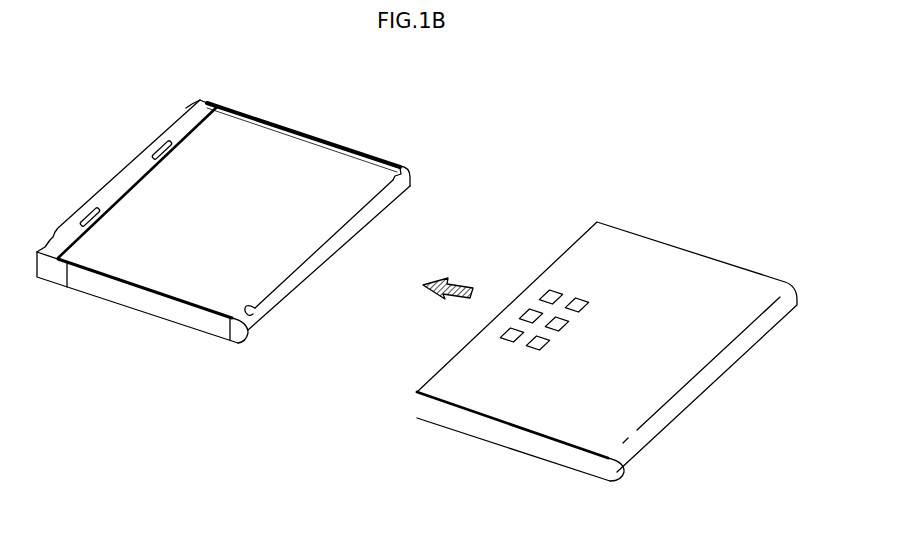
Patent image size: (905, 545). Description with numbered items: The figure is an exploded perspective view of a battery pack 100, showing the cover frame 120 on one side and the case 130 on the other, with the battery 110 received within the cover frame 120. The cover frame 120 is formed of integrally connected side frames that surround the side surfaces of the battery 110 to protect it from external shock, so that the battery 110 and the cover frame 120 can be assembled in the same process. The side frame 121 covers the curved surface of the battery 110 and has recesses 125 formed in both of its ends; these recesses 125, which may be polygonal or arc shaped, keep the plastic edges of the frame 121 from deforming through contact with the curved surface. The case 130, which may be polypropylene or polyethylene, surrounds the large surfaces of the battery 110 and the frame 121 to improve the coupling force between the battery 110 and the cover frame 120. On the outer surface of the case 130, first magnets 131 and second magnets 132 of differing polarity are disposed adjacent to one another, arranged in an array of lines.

The battery pack 100 is at (70, 112).
The battery 110 is at (297, 150).
The cover frame 120 is at (341, 282).
The side frame 121 is at (360, 221).
The recess 125 is at (403, 168).
The case 130 is at (725, 401).
The first magnet 131 is at (495, 343).
The second magnet 132 is at (578, 287).